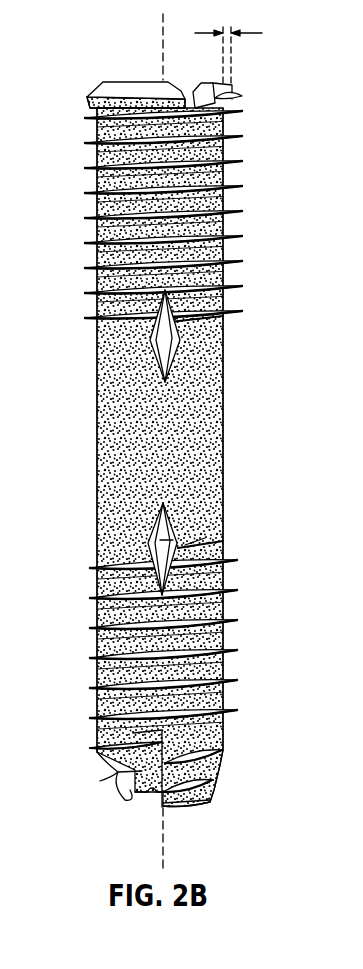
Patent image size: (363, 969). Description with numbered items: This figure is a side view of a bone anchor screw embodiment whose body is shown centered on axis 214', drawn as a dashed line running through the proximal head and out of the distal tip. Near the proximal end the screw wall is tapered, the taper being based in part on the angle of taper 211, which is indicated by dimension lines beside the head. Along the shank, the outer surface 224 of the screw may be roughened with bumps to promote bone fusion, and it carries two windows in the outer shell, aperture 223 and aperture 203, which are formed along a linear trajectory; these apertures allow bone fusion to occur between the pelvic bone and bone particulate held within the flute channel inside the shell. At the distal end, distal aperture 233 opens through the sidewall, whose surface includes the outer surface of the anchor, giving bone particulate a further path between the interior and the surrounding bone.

The axis 214' is at (120, 441).
The angle of taper 211 is at (225, 83).
The aperture 223 is at (172, 345).
The outer surface 224 is at (224, 443).
The aperture 203 is at (234, 566).
The distal aperture 233 is at (118, 776).